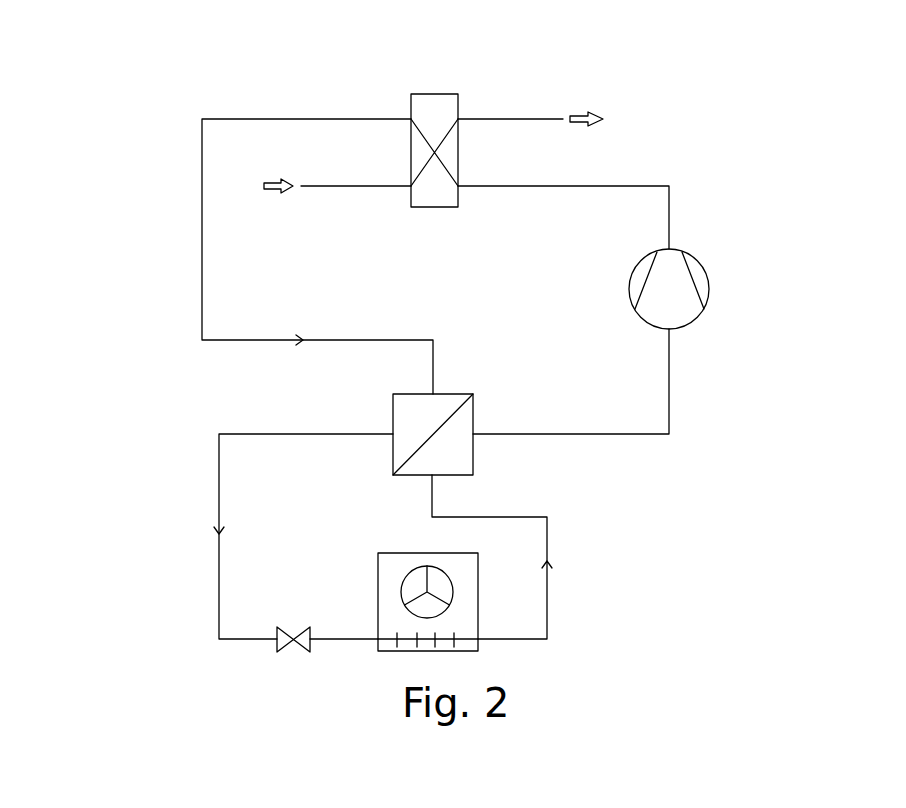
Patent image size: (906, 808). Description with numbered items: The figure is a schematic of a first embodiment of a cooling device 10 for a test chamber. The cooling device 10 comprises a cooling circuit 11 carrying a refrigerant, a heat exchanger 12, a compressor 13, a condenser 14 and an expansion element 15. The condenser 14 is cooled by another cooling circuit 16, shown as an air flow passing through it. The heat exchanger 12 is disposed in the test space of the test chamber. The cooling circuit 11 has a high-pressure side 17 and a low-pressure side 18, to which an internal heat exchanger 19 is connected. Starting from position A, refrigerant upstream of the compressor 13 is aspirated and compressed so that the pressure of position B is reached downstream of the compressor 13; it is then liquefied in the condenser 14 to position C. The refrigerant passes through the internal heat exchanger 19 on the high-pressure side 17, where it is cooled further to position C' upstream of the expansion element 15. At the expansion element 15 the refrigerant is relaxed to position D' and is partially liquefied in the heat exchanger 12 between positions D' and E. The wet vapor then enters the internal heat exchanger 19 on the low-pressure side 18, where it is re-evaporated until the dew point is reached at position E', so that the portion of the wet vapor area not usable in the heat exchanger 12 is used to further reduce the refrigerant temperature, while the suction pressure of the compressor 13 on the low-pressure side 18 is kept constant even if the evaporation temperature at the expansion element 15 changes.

The cooling device 10 is at (122, 187).
The cooling circuit 11 is at (192, 299).
The heat exchanger 12 is at (470, 583).
The compressor 13 is at (672, 258).
The condenser 14 is at (445, 110).
The expansion element 15 is at (304, 638).
The another cooling circuit 16 is at (353, 193).
The high-pressure side 17 is at (218, 460).
The low-pressure side 18 is at (635, 437).
The internal heat exchanger 19 is at (443, 405).